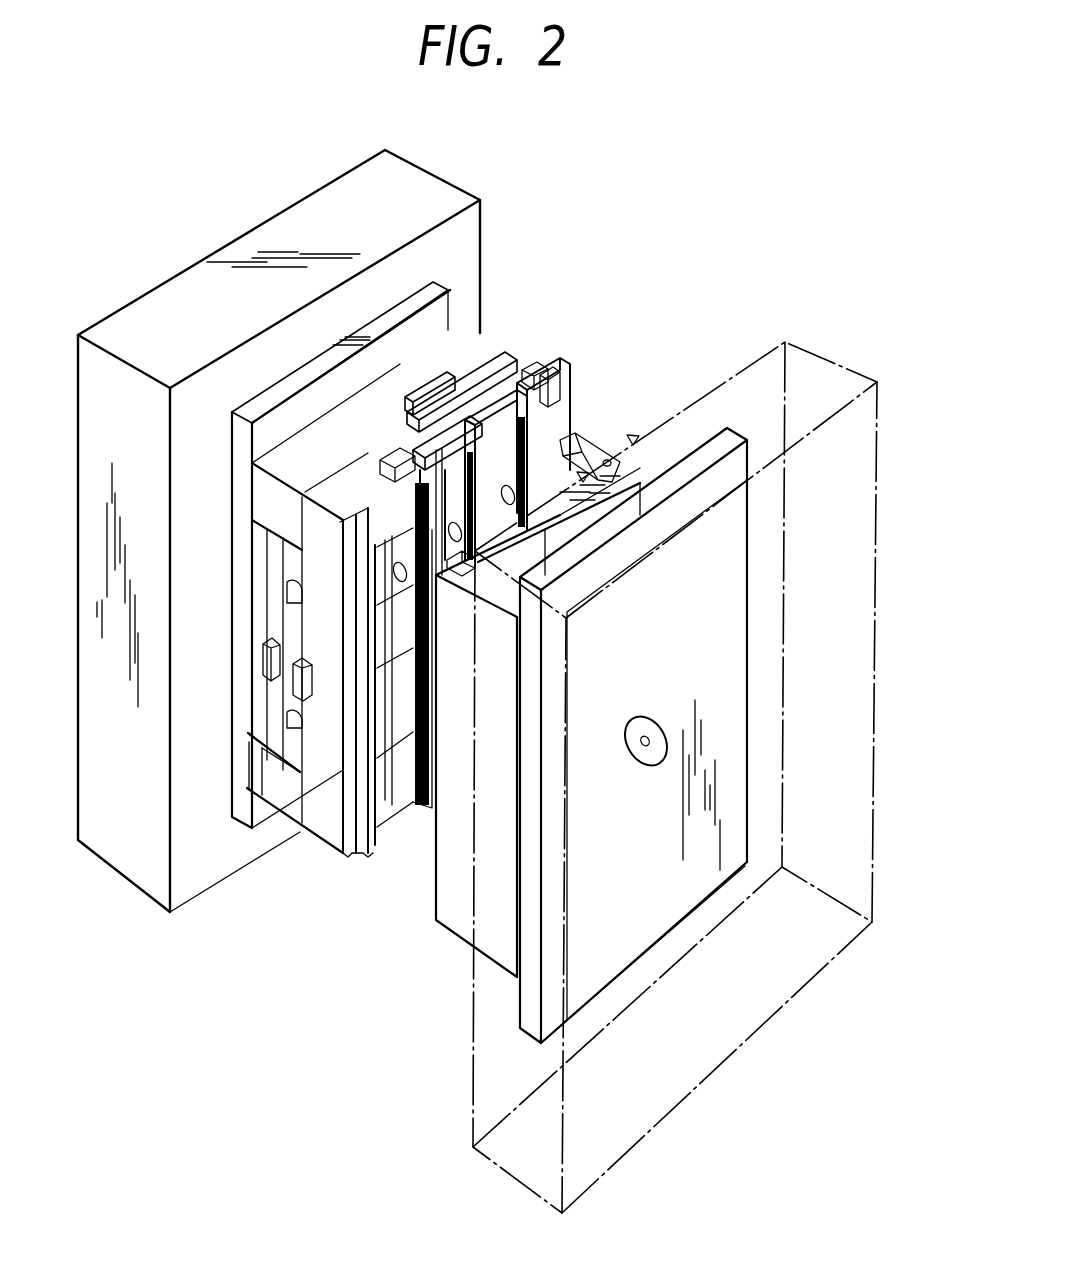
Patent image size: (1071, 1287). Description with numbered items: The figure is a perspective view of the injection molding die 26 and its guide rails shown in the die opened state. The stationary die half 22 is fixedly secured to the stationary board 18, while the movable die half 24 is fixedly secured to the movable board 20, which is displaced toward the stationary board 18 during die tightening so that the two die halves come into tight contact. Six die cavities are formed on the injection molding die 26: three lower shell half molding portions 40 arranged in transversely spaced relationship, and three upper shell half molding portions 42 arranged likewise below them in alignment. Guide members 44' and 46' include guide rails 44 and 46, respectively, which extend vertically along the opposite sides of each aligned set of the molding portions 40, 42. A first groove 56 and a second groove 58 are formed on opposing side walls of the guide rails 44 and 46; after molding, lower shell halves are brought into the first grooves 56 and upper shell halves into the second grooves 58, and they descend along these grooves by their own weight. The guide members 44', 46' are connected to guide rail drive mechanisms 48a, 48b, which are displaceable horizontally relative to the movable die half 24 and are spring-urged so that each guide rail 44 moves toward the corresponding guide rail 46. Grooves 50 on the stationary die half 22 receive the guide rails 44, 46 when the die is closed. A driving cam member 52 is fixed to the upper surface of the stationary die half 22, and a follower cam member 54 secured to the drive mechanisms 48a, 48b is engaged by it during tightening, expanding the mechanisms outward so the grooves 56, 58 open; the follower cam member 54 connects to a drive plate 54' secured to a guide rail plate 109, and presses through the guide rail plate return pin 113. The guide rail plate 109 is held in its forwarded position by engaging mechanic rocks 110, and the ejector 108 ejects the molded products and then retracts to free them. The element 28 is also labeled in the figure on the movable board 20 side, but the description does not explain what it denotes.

The stationary board 18 is at (796, 342).
The movable board 20 is at (432, 190).
The stationary die half 22 is at (668, 452).
The movable die half 24 is at (478, 356).
The injection molding die 26 is at (572, 355).
The frame 28 is at (330, 870).
The lower shell half molding portions 40 is at (340, 478).
The upper shell half molding portions 42 is at (392, 808).
The guide rail 44 is at (349, 901).
The guide member 44' is at (268, 669).
The guide rail 46 is at (490, 659).
The guide member 46' is at (373, 442).
The guide rail drive mechanism 48a is at (530, 366).
The guide rail drive mechanism 48b is at (550, 372).
The grooves 50 is at (472, 558).
The driving cam member 52 is at (592, 442).
The follower cam member 54 is at (466, 343).
The drive plate 54' is at (434, 326).
The first groove 56 is at (407, 432).
The second groove 58 is at (410, 805).
The ejector 108 is at (255, 722).
The guide rail plate 109 is at (247, 762).
The mechanic rocks 110 is at (296, 688).
The guide rail plate return pin 113 is at (297, 722).